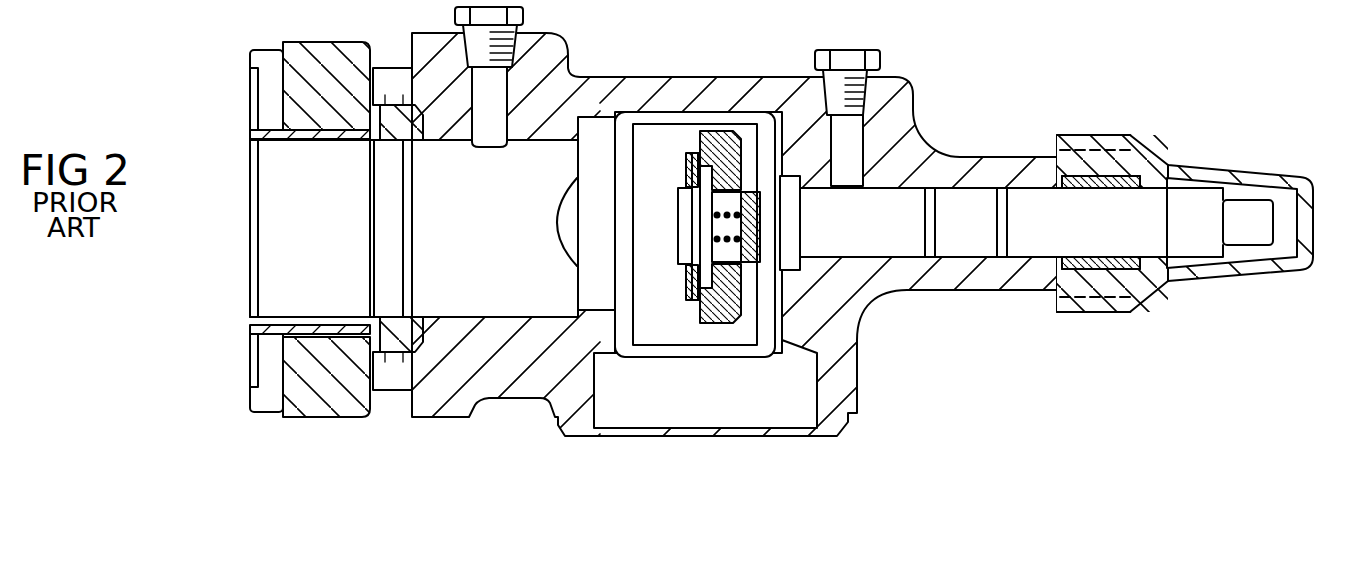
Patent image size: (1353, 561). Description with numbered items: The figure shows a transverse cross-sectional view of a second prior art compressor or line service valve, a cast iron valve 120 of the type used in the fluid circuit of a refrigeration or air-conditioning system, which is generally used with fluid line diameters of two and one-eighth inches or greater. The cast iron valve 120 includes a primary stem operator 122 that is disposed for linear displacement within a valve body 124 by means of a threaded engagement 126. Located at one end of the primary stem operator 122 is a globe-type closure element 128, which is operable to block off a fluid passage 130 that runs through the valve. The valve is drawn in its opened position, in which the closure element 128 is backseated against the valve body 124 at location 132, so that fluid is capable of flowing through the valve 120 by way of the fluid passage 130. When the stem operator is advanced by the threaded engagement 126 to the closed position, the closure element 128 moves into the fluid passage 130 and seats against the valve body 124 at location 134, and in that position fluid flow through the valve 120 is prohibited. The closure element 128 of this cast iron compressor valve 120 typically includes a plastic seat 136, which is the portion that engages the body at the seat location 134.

The cast iron valve 120 is at (656, 280).
The primary stem operator 122 is at (1195, 205).
The valve body 124 is at (656, 280).
The threaded engagement 126 is at (978, 188).
The globe-type closure element 128 is at (725, 140).
The fluid passage 130 is at (590, 207).
The backseat location 132 is at (790, 282).
The seat location 134 is at (627, 117).
The plastic seat 136 is at (700, 307).